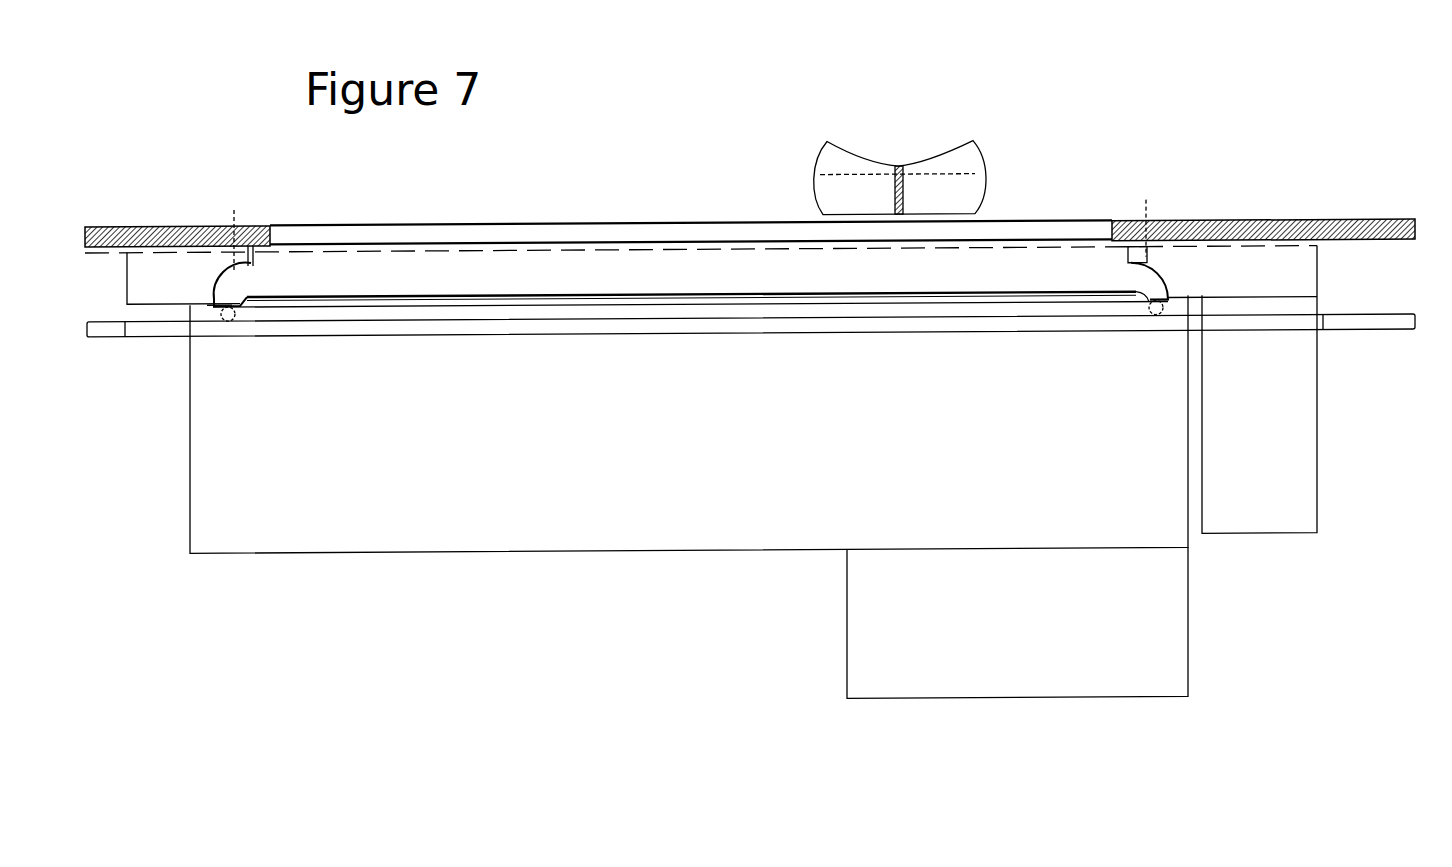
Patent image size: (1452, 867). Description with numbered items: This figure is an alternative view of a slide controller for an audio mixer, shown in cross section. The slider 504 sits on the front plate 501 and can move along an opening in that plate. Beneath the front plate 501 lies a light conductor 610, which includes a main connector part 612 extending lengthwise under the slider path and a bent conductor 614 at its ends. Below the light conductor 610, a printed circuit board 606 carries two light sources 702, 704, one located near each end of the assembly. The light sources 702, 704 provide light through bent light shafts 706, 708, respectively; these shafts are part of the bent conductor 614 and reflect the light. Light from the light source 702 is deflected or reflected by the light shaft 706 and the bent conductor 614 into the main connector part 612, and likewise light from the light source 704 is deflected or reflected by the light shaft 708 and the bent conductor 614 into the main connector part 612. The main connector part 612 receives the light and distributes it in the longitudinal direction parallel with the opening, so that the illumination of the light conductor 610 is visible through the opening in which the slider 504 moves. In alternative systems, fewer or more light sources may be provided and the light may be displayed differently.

The front plate 501 is at (1252, 215).
The slider 504 is at (896, 149).
The printed circuit board 606 is at (1370, 316).
The light conductor 610 is at (600, 267).
The main connector part 612 is at (457, 284).
The bent conductor 614 is at (316, 248).
The light source 702 is at (238, 320).
The light source 704 is at (1146, 313).
The bent light shaft 706 is at (226, 286).
The bent light shaft 708 is at (1160, 283).